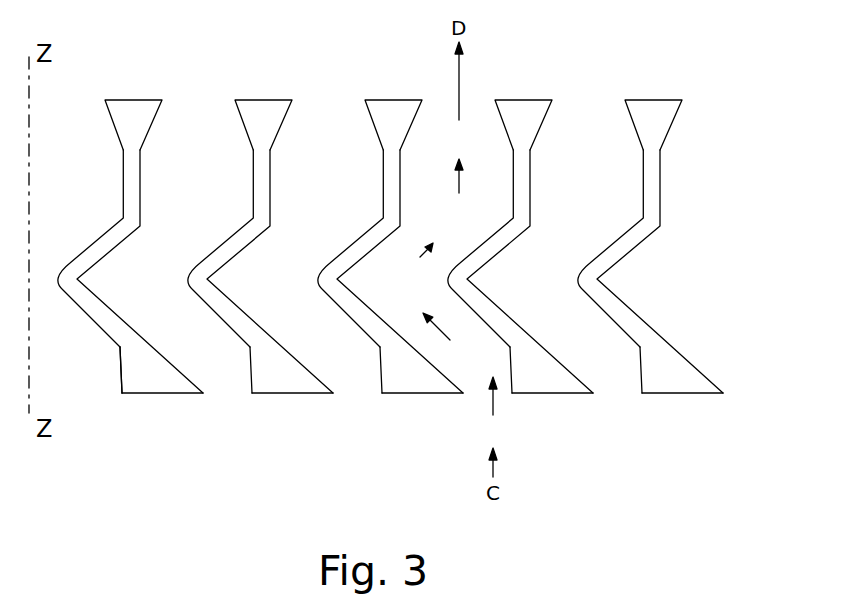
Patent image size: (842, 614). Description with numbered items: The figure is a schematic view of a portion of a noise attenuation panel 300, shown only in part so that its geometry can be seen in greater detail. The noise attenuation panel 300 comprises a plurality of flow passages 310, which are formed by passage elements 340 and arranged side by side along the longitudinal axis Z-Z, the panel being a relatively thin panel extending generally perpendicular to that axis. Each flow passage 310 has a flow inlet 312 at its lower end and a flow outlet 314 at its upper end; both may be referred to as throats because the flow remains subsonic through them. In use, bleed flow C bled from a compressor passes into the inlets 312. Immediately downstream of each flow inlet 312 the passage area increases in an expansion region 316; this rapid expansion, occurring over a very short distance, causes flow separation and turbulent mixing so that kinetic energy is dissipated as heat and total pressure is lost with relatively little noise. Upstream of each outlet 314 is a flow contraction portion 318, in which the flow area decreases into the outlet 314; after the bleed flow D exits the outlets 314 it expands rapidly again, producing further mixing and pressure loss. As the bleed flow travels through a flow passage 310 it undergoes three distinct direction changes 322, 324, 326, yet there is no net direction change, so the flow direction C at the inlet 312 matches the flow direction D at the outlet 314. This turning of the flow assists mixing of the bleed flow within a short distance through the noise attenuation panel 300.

The noise attenuation panel 300 is at (426, 258).
The flow passage 310 is at (409, 283).
The flow inlet 312 is at (431, 404).
The flow outlet 314 is at (183, 102).
The expansion region 316 is at (432, 362).
The flow contraction portion 318 is at (222, 133).
The direction change 322 is at (447, 327).
The direction change 324 is at (425, 252).
The direction change 326 is at (458, 183).
The passage element 340 is at (130, 367).